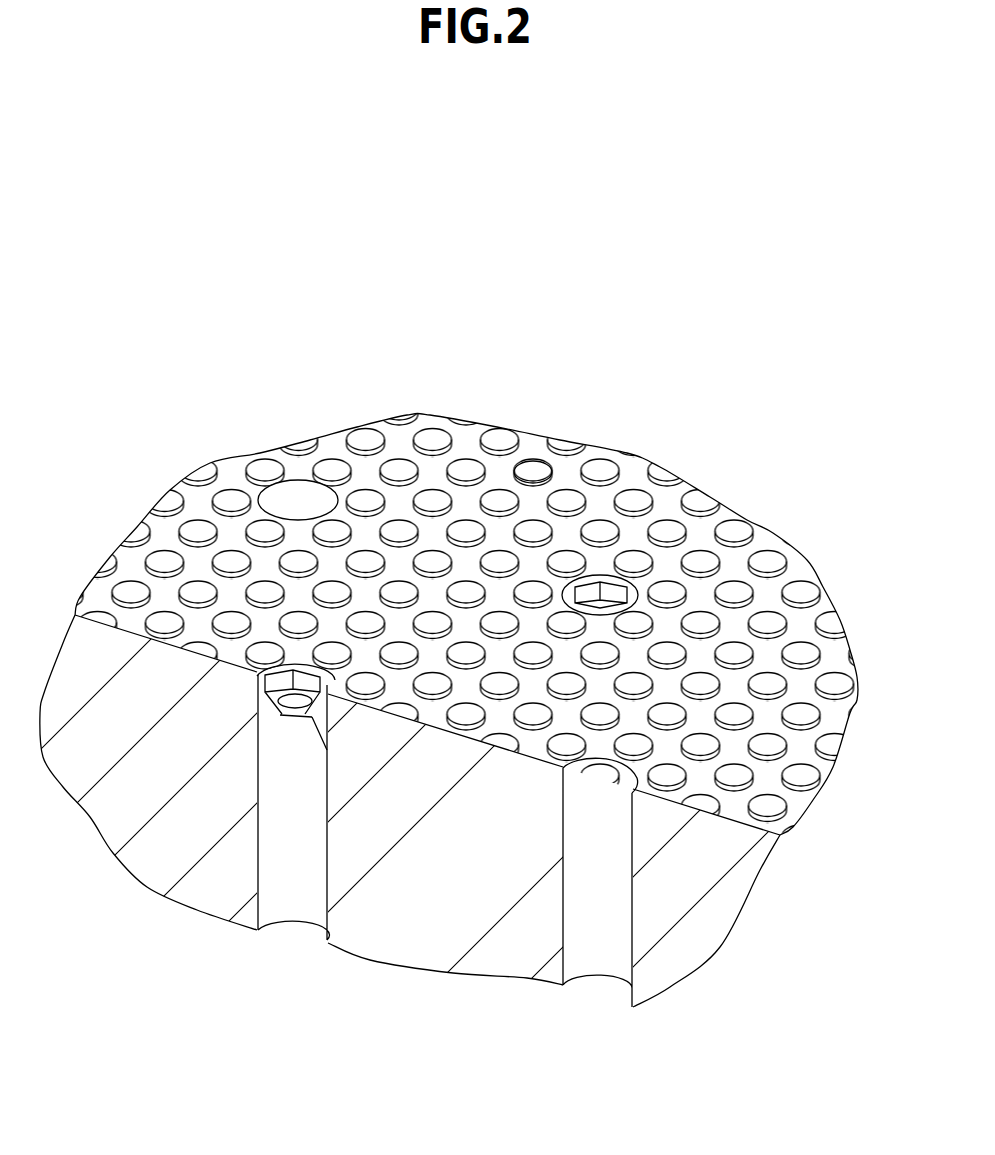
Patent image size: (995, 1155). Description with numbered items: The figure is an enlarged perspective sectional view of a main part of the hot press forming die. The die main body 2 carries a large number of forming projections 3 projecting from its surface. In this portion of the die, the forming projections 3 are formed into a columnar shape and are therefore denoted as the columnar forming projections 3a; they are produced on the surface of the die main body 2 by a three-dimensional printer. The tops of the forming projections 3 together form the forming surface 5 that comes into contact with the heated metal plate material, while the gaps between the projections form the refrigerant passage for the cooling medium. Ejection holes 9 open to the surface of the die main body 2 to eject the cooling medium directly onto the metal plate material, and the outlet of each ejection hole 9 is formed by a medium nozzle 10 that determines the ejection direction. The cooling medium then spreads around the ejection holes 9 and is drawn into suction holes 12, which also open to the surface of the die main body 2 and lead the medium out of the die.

The die main body 2 is at (418, 943).
The forming projections 3 is at (398, 527).
The forming projections with the columnar shape 3a is at (540, 530).
The forming surface 5 is at (190, 521).
The ejection holes 9 is at (270, 877).
The medium nozzle 10 is at (605, 585).
The suction holes 12 is at (313, 502).